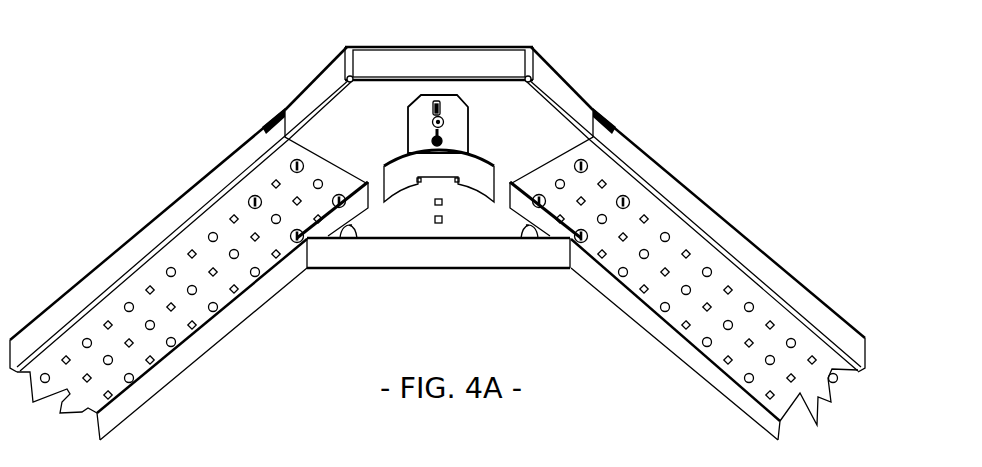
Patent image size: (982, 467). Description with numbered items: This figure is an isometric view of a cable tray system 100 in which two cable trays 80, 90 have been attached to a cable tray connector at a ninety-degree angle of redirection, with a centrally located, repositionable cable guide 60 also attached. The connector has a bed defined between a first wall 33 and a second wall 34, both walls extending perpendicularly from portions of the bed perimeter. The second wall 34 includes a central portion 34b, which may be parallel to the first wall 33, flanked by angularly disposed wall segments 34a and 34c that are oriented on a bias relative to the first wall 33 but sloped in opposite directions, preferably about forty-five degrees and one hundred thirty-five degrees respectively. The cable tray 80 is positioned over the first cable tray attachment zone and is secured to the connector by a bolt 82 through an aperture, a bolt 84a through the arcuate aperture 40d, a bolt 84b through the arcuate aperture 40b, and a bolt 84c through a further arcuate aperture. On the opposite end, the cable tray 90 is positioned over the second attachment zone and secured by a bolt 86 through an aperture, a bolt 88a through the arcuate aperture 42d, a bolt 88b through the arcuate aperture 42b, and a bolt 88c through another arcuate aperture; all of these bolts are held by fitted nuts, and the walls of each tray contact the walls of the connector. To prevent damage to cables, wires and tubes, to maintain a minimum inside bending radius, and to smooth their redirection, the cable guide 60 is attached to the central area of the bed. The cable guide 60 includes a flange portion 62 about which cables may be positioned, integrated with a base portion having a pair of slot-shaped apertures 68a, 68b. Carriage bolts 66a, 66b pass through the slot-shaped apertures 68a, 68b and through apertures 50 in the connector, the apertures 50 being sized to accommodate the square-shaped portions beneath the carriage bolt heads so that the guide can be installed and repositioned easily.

The cable tray system 100 is at (437, 225).
The second wall 34 is at (429, 72).
The wall segment 34a is at (308, 90).
The central portion 34b is at (441, 55).
The wall segment 34c is at (563, 85).
The cable guide 60 is at (454, 115).
The carriage bolt 66a is at (433, 115).
The carriage bolt 66b is at (434, 137).
The slot-shaped aperture 68a is at (444, 108).
The slot-shaped aperture 68b is at (443, 136).
The flange portion 62 is at (408, 174).
The apertures 50 is at (446, 203).
The arcuate aperture 40b is at (364, 181).
The arcuate aperture 42b is at (514, 181).
The arcuate aperture 40d is at (355, 239).
The arcuate aperture 42d is at (523, 239).
The first wall 33 is at (545, 258).
The cable tray 80 is at (196, 259).
The bolt 82 is at (270, 221).
The bolt 84a is at (334, 192).
The bolt 84b is at (302, 160).
The bolt 84c is at (248, 194).
The cable tray 90 is at (680, 259).
The bolt 86 is at (597, 229).
The bolt 88a is at (544, 192).
The bolt 88b is at (576, 161).
The bolt 88c is at (630, 194).